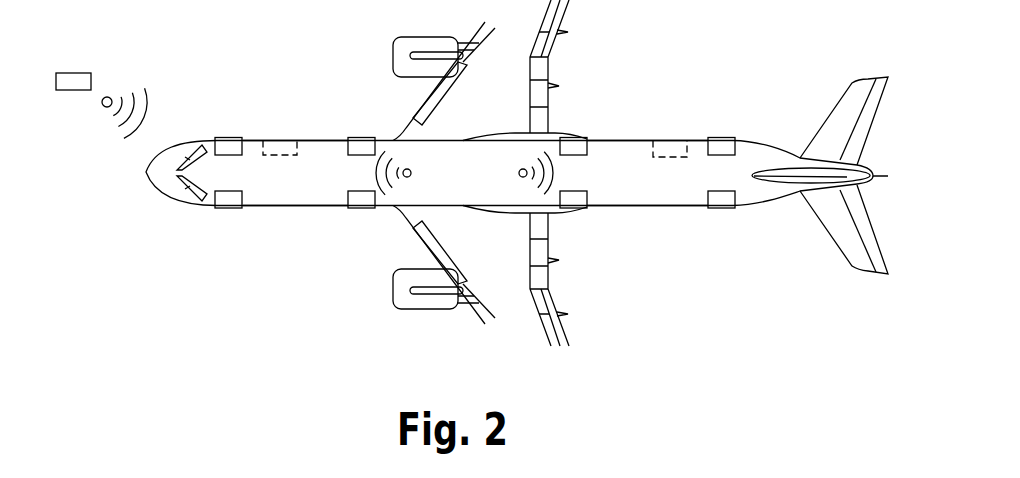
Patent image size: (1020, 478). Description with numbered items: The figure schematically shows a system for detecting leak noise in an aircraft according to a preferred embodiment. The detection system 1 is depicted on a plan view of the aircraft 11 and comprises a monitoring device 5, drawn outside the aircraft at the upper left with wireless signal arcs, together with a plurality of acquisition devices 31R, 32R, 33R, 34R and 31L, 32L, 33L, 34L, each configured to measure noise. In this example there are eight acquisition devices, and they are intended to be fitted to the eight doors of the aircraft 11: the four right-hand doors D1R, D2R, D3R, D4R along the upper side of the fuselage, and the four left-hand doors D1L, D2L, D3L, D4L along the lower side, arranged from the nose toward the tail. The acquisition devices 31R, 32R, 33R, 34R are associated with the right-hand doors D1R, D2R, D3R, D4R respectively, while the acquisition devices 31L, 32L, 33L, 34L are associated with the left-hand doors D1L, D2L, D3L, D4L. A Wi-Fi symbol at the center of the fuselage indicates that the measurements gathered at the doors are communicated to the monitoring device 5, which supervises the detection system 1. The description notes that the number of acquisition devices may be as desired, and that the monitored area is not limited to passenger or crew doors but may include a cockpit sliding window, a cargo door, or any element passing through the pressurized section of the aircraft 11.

The detection system 1 is at (309, 307).
The monitoring device 5 is at (70, 81).
The aircraft 11 is at (875, 122).
The door D1R is at (217, 137).
The door D2R is at (362, 137).
The door D3R is at (577, 137).
The door D4R is at (718, 137).
The door D1L is at (223, 208).
The door D2L is at (363, 208).
The door D3L is at (572, 208).
The door D4L is at (727, 208).
The acquisition device 31R is at (242, 147).
The acquisition device 32R is at (348, 146).
The acquisition device 33R is at (587, 146).
The acquisition device 34R is at (708, 146).
The acquisition device 31L is at (242, 199).
The acquisition device 32L is at (348, 200).
The acquisition device 33L is at (587, 199).
The acquisition device 34L is at (708, 199).